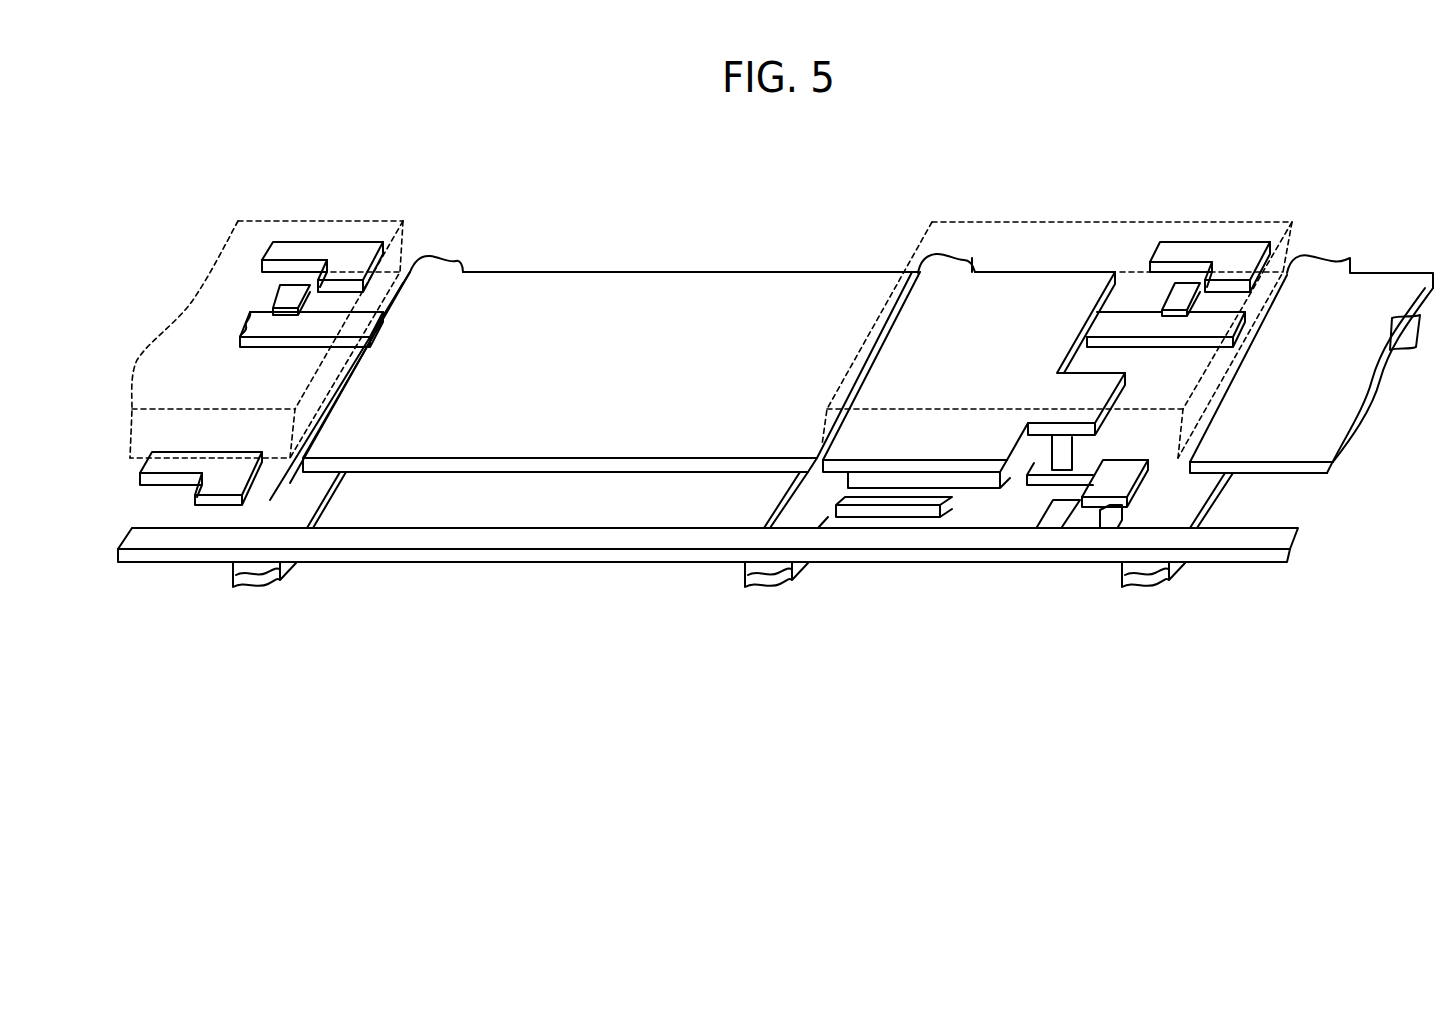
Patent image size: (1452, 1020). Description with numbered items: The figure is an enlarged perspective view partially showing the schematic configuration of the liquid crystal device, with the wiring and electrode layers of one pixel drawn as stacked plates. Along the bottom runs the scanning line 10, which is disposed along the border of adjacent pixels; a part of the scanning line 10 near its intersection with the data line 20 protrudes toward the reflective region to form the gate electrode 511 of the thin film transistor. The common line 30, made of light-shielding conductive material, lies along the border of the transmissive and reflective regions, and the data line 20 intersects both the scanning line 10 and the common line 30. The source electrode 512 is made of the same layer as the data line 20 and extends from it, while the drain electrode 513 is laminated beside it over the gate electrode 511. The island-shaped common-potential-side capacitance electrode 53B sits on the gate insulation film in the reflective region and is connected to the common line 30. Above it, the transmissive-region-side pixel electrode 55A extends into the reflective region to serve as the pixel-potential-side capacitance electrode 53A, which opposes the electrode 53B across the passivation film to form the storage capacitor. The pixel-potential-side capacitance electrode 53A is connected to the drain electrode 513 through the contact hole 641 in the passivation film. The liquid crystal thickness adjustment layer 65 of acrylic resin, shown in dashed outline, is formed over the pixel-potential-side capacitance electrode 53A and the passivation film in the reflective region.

The scanning line 10 is at (273, 583).
The data line 20 is at (1252, 540).
The common line 30 is at (783, 583).
The pixel-potential-side capacitance electrode 53A is at (1017, 305).
The common-potential-side capacitance electrode 53B is at (997, 477).
The transmissive-region-side pixel electrode 55A is at (764, 310).
The liquid crystal thickness adjustment layer 65 is at (1133, 248).
The gate electrode 511 is at (1045, 510).
The source electrode 512 is at (1107, 512).
The drain electrode 513 is at (1127, 467).
The contact hole 641 is at (1060, 450).